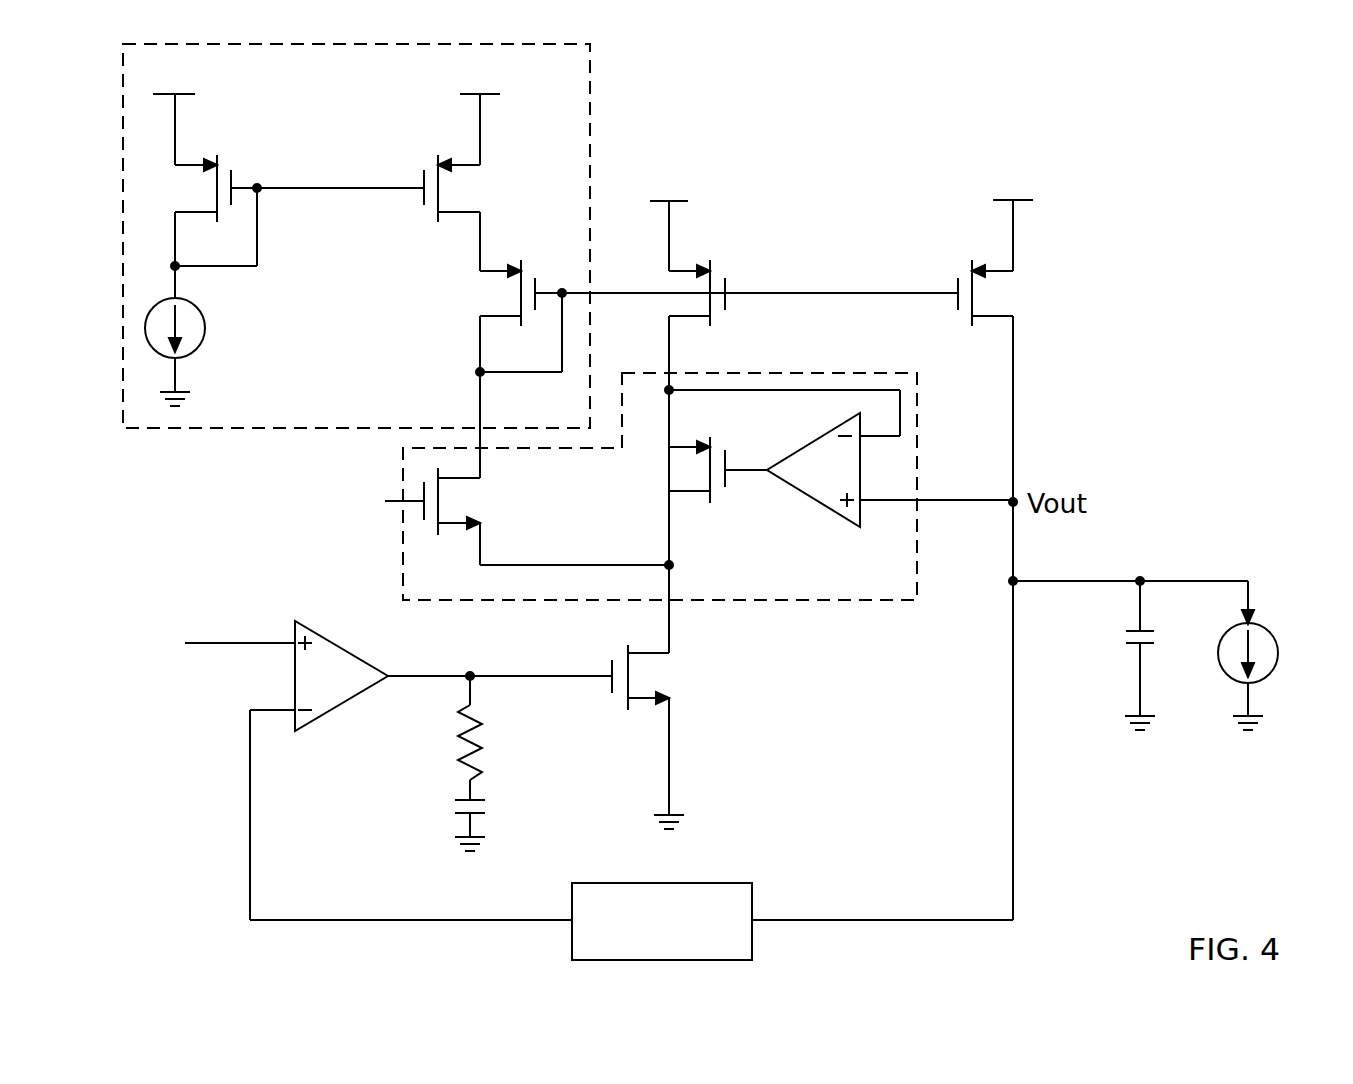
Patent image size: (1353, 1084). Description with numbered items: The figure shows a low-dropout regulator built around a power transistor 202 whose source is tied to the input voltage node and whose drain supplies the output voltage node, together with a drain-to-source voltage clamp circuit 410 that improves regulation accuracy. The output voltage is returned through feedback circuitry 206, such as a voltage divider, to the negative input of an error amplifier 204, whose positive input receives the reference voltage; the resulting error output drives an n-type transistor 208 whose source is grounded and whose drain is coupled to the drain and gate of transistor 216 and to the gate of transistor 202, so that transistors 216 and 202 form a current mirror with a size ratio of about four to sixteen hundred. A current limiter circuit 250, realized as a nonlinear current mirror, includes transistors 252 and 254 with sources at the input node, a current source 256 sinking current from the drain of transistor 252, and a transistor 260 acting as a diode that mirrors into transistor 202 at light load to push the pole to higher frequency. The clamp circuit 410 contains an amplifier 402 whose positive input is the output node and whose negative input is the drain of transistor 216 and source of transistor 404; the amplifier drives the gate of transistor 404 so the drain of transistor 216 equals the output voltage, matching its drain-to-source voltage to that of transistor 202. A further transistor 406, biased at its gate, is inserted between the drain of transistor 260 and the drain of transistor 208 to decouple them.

The current limiter circuit 250 is at (590, 95).
The transistor 252 is at (232, 176).
The transistor 254 is at (439, 198).
The current source 256 is at (186, 303).
The transistor 260 is at (538, 282).
The transistor 216 is at (728, 285).
The transistor 202 is at (1000, 318).
The drain-to-source voltage clamp circuit 410 is at (882, 601).
The amplifier 402 is at (820, 445).
The transistor 404 is at (690, 493).
The transistor 406 is at (456, 527).
The amplifier 204 is at (343, 705).
The transistor 208 is at (648, 702).
The feedback circuitry 206 is at (753, 897).